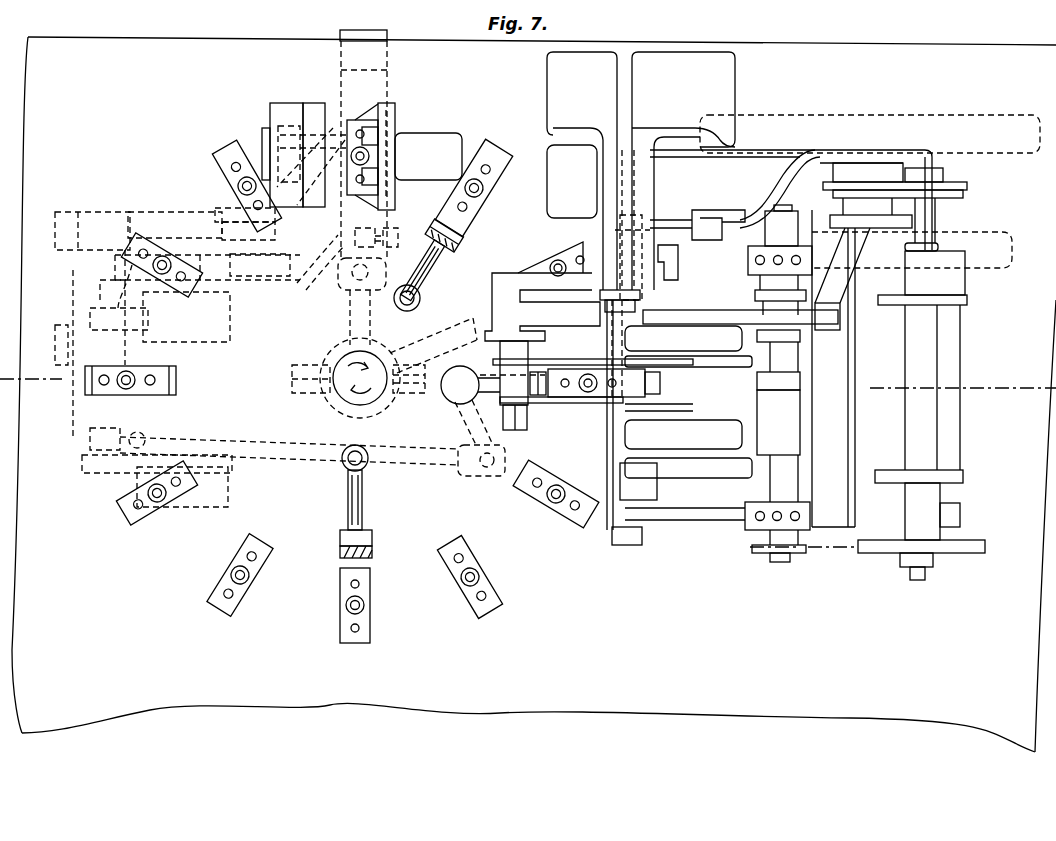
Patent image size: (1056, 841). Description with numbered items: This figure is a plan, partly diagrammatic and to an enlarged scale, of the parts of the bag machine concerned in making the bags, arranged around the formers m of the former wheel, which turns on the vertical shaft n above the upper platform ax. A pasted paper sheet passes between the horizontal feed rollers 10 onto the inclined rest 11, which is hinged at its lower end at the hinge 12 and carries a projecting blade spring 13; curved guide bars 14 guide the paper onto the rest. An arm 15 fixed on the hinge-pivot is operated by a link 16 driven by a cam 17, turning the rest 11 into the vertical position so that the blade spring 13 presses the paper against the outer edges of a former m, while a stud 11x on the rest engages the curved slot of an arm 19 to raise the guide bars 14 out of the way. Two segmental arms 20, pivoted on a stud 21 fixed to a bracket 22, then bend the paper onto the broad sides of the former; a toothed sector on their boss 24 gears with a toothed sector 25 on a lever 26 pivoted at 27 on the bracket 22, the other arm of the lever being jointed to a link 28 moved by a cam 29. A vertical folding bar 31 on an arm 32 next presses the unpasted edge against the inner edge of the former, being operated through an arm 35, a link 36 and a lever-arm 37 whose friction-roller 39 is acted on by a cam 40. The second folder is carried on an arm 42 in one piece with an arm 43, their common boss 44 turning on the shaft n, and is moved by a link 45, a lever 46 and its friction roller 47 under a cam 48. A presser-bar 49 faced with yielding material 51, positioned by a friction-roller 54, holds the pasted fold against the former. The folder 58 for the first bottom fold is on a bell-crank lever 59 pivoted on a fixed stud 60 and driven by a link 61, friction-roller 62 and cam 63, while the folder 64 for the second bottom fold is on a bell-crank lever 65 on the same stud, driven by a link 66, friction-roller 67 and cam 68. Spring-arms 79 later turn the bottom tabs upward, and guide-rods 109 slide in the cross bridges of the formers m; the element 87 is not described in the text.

The horizontal feed rollers 10 is at (802, 421).
The inclined rest 11 is at (638, 308).
The stud 11x is at (676, 259).
The hinge 12 is at (626, 545).
The blade spring 13 is at (650, 383).
The curved guide bars 14 is at (698, 328).
The arm 15 is at (692, 223).
The link 16 is at (768, 178).
The cam 17 is at (1010, 152).
The arm 19 is at (756, 240).
The segmental arms 20 is at (592, 364).
The stud 21 is at (506, 441).
The bracket 22 is at (508, 268).
The boss 24 is at (492, 301).
The toothed sector 25 is at (540, 316).
The lever 26 is at (693, 317).
The pivot 27 is at (636, 339).
The link 28 is at (874, 296).
The cam 29 is at (1008, 270).
The vertical folding bar 31 is at (546, 400).
The arm 32 is at (470, 374).
The arm 35 is at (470, 420).
The link 36 is at (298, 455).
The lever-arm 37 is at (88, 447).
The friction-roller 39 is at (90, 471).
The cam 40 is at (242, 473).
The arm 42 is at (446, 343).
The arm 43 is at (347, 318).
The boss 44 is at (338, 403).
The link 45 is at (342, 278).
The lever 46 is at (140, 322).
The friction roller 47 is at (100, 294).
The cam 48 is at (242, 300).
The presser-bar 49 is at (466, 244).
The yielding material 51 is at (470, 231).
The friction-roller 54 is at (403, 308).
The folder 58 is at (397, 118).
The bell-crank lever 59 is at (396, 161).
The fixed stud 60 is at (362, 31).
The link 61 is at (292, 283).
The friction-roller 62 is at (326, 241).
The cam 63 is at (222, 262).
The folder 64 is at (282, 108).
The bell-crank lever 65 is at (334, 133).
The link 66 is at (181, 208).
The friction-roller 67 is at (258, 264).
The cam 68 is at (276, 226).
The spring-arms 79 is at (178, 381).
The plate 87 is at (250, 577).
The guide-rods 109 is at (257, 556).
The former m is at (500, 168).
The vertical shaft n is at (385, 394).
The platform ax is at (800, 52).